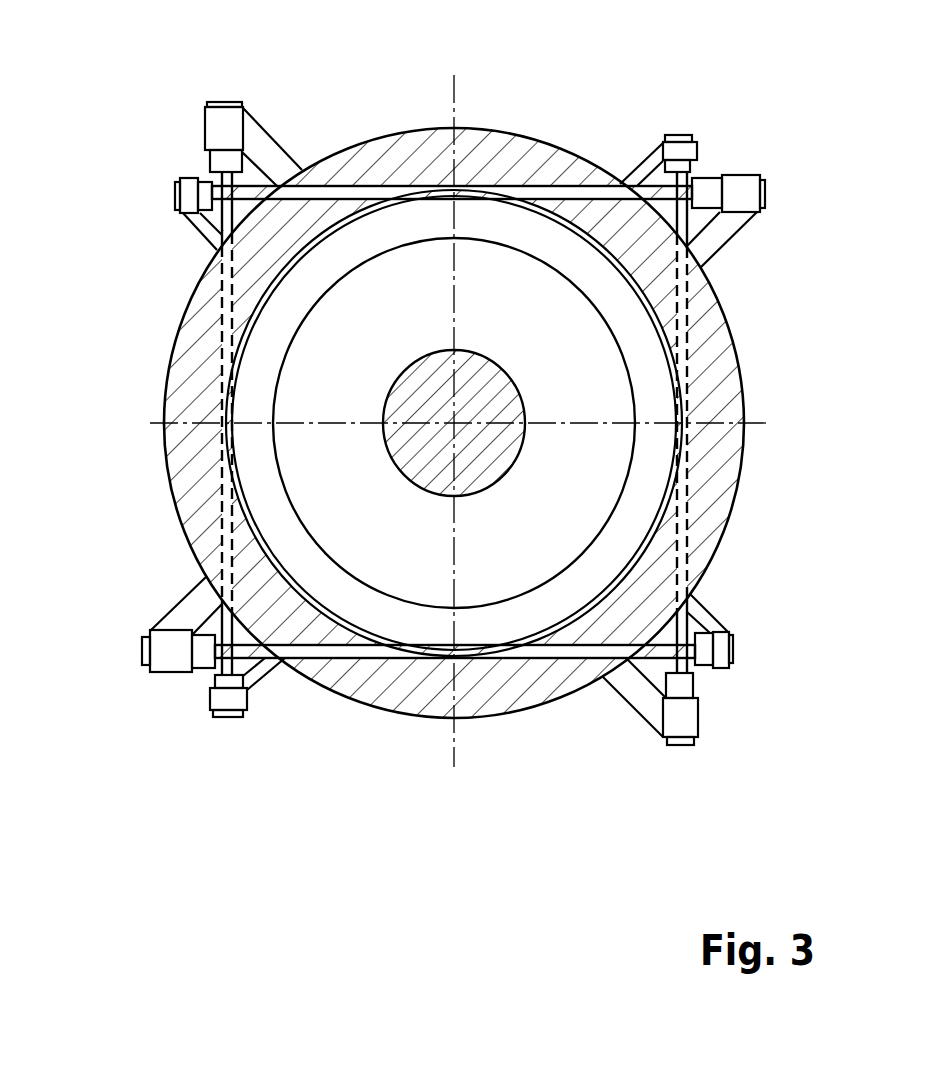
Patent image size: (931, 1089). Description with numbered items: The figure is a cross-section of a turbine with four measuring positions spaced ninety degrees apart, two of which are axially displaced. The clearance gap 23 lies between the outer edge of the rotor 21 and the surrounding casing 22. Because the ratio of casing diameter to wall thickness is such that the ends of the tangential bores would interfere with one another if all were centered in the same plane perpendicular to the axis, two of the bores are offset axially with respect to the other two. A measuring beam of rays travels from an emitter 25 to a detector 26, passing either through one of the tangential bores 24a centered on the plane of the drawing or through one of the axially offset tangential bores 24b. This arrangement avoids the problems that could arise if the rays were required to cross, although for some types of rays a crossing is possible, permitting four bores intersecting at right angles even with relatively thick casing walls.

The rotor 21 is at (628, 332).
The casing 22 is at (720, 353).
The clearance gap 23 is at (452, 190).
The tangential bores 24a is at (367, 193).
The axially offset tangential bores 24b is at (223, 307).
The emitter 25 is at (217, 103).
The detector 26 is at (688, 135).